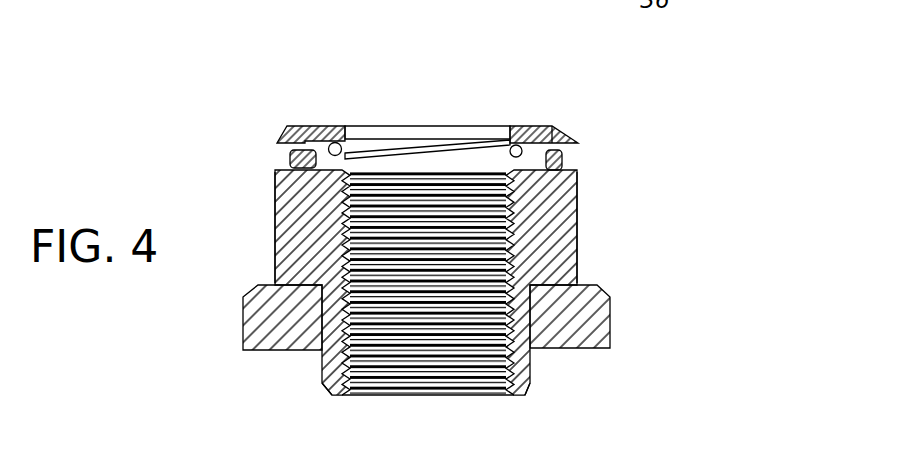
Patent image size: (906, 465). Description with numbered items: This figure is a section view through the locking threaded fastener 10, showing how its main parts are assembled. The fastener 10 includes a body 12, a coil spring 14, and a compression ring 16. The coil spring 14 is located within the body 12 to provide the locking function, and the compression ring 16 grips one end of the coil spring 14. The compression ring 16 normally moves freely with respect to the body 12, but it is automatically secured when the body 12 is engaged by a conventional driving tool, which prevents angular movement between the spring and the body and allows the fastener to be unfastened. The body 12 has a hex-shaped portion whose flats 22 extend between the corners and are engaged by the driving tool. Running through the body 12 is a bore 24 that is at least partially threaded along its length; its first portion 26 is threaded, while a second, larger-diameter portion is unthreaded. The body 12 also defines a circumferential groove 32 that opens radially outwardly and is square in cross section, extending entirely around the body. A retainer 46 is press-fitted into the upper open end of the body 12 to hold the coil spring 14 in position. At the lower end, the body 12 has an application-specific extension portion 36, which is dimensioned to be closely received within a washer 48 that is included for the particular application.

The locking threaded fastener 10 is at (714, 71).
The body 12 is at (592, 215).
The coil spring 14 is at (428, 134).
The compression ring 16 is at (580, 160).
The flats 22 is at (276, 218).
The bore 24 is at (407, 402).
The first portion 26 is at (450, 353).
The circumferential groove 32 is at (288, 162).
The extension portion 36 is at (530, 362).
The retainer 46 is at (333, 120).
The washer 48 is at (627, 323).